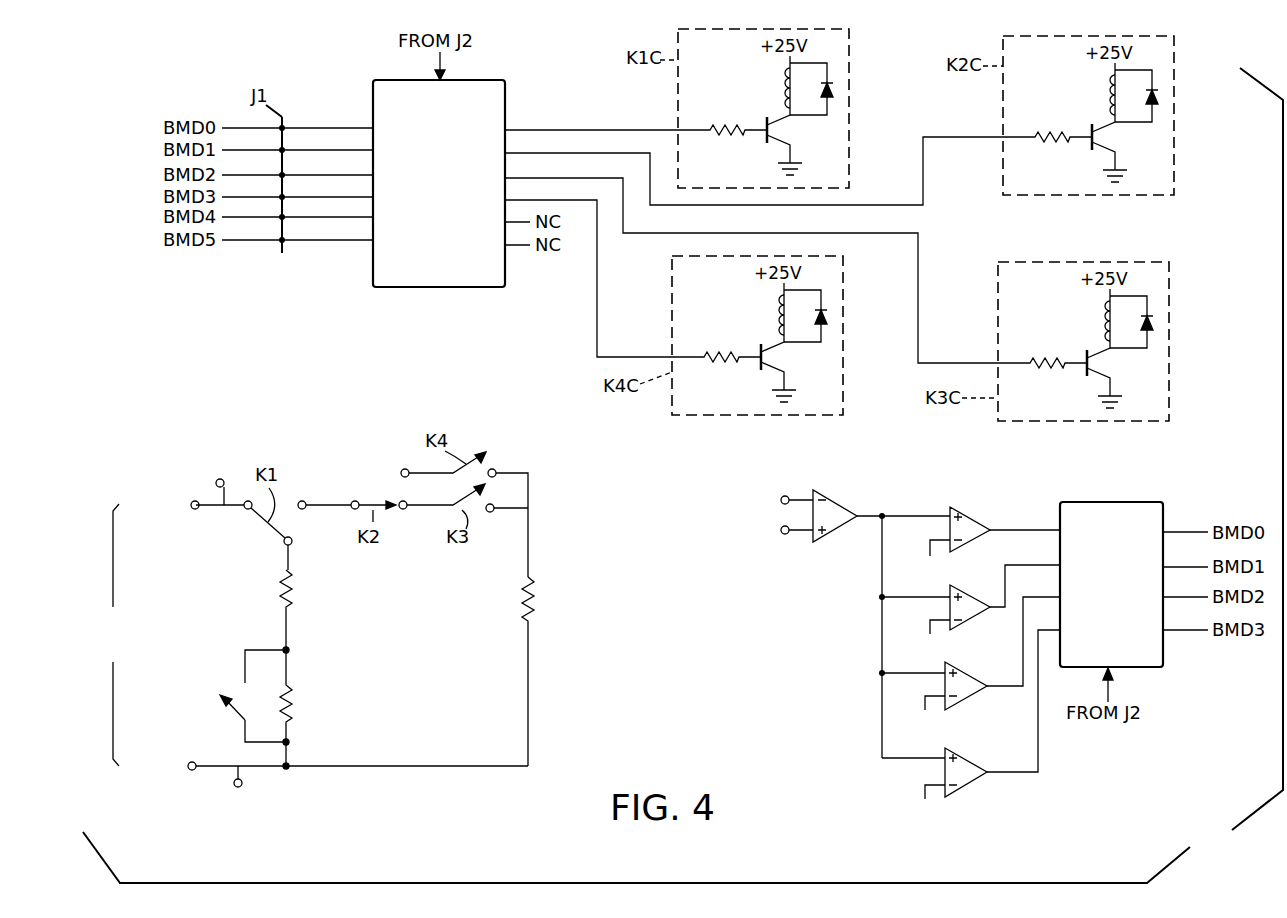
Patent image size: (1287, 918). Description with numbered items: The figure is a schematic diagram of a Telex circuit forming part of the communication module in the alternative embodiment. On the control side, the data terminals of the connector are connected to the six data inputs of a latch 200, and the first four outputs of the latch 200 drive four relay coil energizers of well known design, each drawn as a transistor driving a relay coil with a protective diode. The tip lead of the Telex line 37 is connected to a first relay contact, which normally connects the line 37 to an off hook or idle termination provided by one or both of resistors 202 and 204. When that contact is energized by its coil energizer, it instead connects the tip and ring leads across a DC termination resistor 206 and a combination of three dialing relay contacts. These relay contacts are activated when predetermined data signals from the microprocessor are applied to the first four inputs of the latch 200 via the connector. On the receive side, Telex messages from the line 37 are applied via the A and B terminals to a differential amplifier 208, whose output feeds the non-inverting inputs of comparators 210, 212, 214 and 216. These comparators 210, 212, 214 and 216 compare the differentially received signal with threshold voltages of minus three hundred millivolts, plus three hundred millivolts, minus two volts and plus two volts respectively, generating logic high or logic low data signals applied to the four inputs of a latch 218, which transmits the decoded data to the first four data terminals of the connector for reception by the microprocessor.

The Telex line 37 is at (306, 633).
The latch 200 is at (470, 290).
The resistor 202 is at (290, 590).
The resistor 204 is at (291, 705).
The DC termination resistor 206 is at (534, 590).
The differential amplifier 208 is at (836, 536).
The comparator 210 is at (984, 518).
The comparator 212 is at (968, 622).
The comparator 214 is at (970, 700).
The comparator 216 is at (972, 788).
The latch 218 is at (1109, 502).